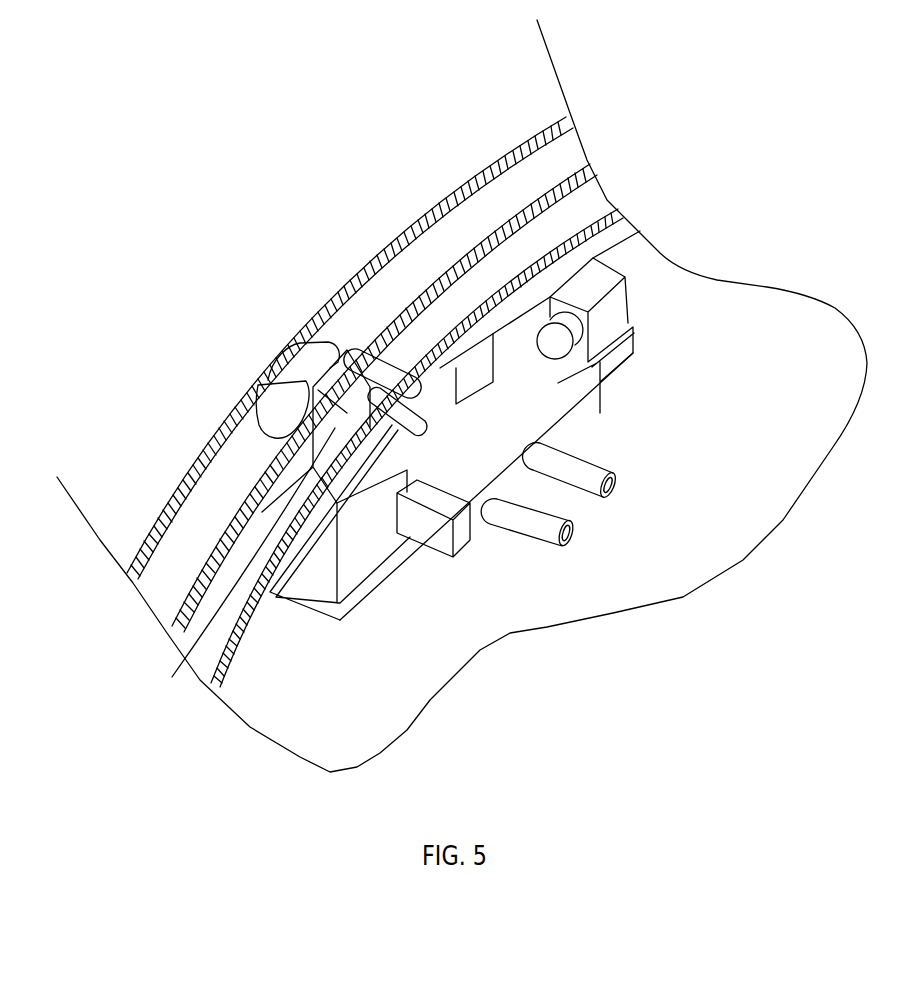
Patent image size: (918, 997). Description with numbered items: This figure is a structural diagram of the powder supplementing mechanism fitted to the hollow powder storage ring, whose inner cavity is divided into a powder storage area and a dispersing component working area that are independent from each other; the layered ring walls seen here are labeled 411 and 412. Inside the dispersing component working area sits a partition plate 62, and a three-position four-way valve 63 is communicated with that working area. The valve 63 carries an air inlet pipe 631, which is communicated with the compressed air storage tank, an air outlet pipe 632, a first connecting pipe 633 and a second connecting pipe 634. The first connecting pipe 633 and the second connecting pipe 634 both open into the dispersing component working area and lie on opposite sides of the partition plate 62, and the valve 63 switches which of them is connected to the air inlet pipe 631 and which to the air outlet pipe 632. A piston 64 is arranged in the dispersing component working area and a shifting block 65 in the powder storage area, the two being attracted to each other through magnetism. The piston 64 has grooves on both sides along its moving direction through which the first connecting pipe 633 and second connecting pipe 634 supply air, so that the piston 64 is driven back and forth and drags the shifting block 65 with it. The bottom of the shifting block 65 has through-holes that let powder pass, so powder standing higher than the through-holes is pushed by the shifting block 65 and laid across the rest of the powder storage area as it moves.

The outer sole layer 411 is at (548, 165).
The inner sole layer 412 is at (575, 207).
The partition plate 62 is at (390, 367).
The three-position four-way valve 63 is at (633, 330).
The air inlet pipe 631 is at (610, 497).
The air outlet pipe 632 is at (523, 513).
The first connecting pipe 633 is at (452, 373).
The second connecting pipe 634 is at (408, 420).
The piston 64 is at (347, 400).
The shifting block 65 is at (277, 413).